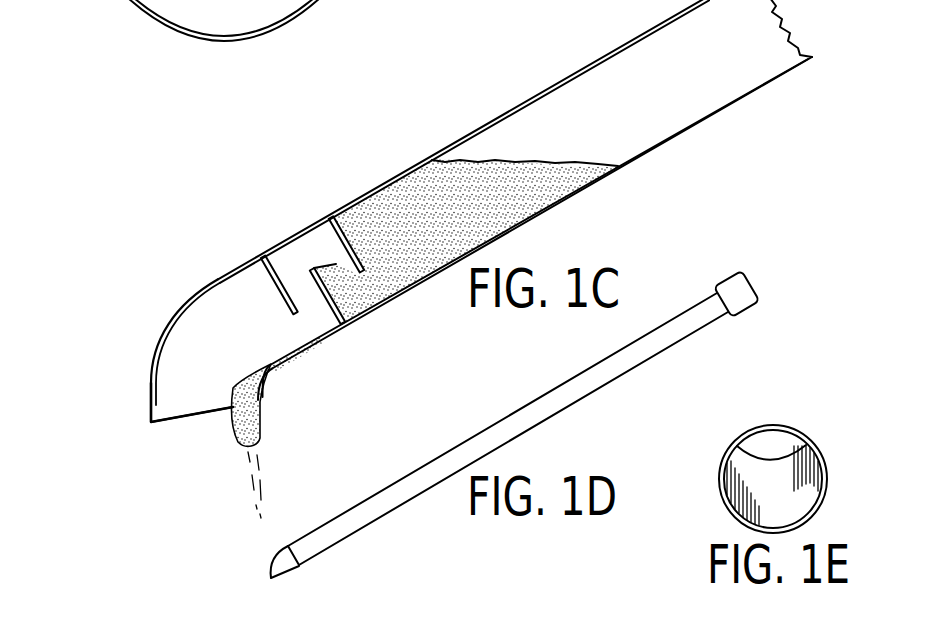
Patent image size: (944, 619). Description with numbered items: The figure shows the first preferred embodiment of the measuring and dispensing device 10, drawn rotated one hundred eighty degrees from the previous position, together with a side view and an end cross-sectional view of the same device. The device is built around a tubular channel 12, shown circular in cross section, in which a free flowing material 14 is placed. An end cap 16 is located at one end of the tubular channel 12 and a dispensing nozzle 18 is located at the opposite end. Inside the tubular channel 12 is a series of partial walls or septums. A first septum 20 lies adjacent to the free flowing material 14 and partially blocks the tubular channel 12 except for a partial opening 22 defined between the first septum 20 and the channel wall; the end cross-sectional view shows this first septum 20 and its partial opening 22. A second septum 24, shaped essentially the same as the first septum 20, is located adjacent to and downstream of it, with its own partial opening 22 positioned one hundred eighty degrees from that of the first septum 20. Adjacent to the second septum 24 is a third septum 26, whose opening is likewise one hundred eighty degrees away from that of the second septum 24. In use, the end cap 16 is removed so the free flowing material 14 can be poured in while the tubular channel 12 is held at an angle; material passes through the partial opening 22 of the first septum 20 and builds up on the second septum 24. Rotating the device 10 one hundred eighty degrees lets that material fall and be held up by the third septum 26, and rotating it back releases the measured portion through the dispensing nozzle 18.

In FIG. 1C, the measuring and dispensing device 10 is at (266, 241).
In FIG. 1D, the measuring and dispensing device 10 is at (773, 273).
In FIG. 1E, the measuring and dispensing device 10 is at (849, 434).
In FIG. 1C, the tubular channel 12 is at (605, 55).
In FIG. 1D, the tubular channel 12 is at (553, 392).
In FIG. 1E, the tubular channel 12 is at (798, 430).
In FIG. 1C, the free flowing material 14 is at (538, 200).
In FIG. 1D, the end cap 16 is at (734, 282).
In FIG. 1C, the dispensing nozzle 18 is at (150, 397).
In FIG. 1D, the dispensing nozzle 18 is at (272, 570).
In FIG. 1E, the first septum 20 is at (724, 490).
In FIG. 1E, the partial opening 22 is at (760, 447).
In FIG. 1C, the second septum 24 is at (346, 232).
In FIG. 1C, the third septum 26 is at (310, 2).